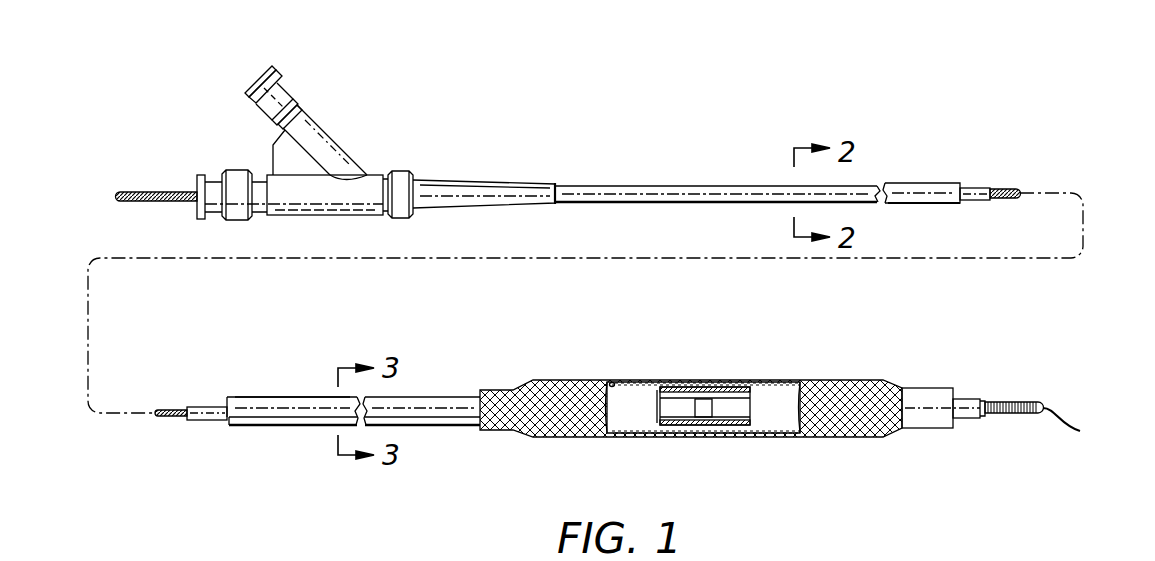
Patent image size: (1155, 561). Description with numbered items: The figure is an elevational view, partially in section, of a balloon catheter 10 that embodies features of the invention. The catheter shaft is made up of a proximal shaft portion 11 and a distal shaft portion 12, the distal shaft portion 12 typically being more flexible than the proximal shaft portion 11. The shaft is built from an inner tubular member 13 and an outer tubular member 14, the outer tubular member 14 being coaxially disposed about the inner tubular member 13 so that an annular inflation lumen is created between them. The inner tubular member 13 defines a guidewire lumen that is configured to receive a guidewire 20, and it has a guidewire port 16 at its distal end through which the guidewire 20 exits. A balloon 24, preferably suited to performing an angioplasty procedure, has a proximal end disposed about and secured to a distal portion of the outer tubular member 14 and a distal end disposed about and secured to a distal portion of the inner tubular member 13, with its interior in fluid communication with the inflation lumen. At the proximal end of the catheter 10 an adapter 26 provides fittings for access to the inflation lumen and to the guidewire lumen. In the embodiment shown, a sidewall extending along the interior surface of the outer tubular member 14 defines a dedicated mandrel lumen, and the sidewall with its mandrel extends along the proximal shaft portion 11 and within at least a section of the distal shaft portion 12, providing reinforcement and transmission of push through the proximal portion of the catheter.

The balloon catheter 10 is at (403, 158).
The proximal shaft portion 11 is at (643, 186).
The distal shaft portion 12 is at (288, 397).
The inner tubular member 13 is at (970, 187).
The outer tubular member 14 is at (932, 183).
The guidewire port 16 is at (985, 416).
The guidewire 20 is at (142, 192).
The balloon 24 is at (562, 380).
The adapter 26 is at (307, 216).